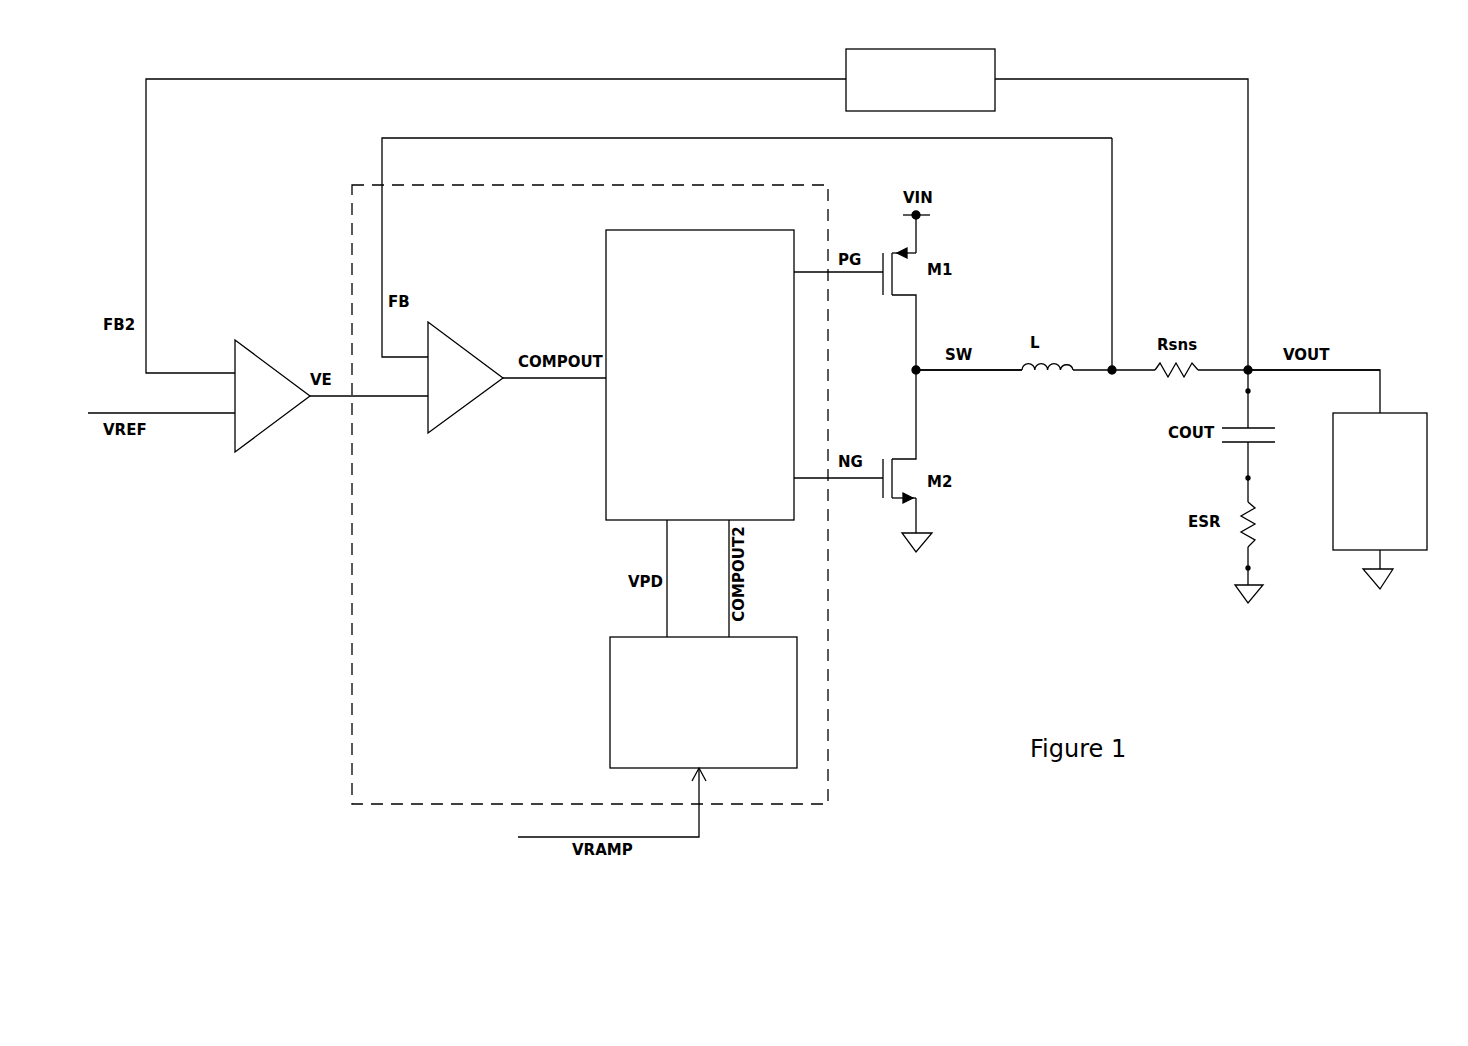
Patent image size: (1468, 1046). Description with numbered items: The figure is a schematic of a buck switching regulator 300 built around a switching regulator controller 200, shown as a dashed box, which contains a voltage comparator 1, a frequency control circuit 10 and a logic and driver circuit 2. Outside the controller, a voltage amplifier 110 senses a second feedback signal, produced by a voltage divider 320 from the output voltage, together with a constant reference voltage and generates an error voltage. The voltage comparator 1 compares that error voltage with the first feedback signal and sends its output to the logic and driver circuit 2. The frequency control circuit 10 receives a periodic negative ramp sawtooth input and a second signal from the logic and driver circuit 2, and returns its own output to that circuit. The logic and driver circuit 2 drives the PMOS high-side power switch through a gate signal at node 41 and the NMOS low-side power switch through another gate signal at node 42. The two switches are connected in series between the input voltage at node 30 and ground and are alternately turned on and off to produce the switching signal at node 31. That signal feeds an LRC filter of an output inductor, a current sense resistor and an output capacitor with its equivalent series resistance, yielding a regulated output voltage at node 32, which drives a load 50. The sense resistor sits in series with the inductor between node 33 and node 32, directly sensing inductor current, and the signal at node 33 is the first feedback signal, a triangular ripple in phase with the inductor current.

The voltage comparator 1 is at (447, 328).
The logic and driver circuit 2 is at (605, 287).
The frequency control circuit 10 is at (603, 708).
The input voltage node 30 is at (922, 238).
The switching node 31 is at (962, 375).
The output voltage node 32 is at (1355, 368).
The feedback signal node 33 is at (1110, 240).
The high-side gate node 41 is at (853, 277).
The low-side gate node 42 is at (850, 482).
The load 50 is at (1427, 488).
The voltage amplifier 110 is at (255, 345).
The switching regulator controller 200 is at (387, 806).
The switching regulator 300 is at (1280, 247).
The voltage divider 320 is at (993, 69).